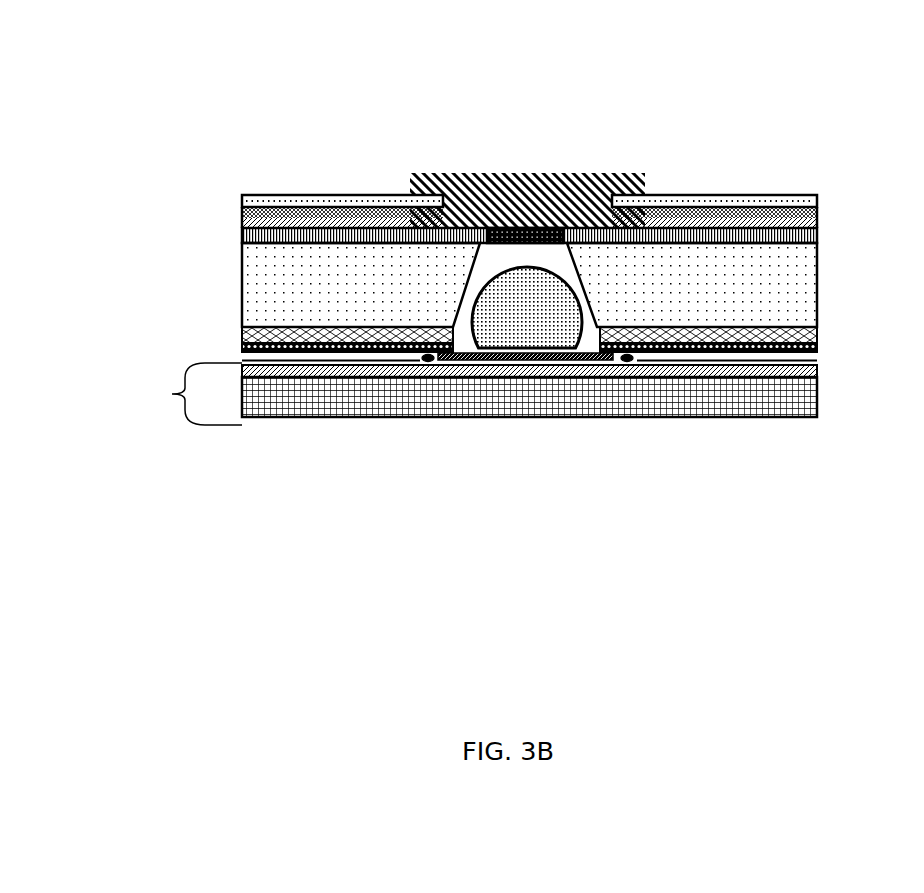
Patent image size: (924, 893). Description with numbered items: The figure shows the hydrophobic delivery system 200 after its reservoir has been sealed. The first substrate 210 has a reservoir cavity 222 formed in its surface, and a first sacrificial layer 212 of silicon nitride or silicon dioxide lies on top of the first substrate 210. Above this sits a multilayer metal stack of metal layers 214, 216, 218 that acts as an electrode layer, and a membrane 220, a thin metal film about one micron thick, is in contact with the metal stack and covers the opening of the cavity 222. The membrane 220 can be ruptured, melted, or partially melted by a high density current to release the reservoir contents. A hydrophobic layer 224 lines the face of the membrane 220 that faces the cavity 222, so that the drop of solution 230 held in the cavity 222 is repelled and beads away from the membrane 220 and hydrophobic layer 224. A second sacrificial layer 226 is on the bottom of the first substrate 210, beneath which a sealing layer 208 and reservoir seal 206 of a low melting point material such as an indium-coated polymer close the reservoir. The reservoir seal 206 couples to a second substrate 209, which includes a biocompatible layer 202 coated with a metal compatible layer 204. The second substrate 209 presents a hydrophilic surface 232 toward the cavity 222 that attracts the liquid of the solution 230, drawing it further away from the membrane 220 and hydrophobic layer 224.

The hydrophobic delivery system 200 is at (296, 62).
The biocompatible layer 202 is at (817, 397).
The metal compatible layer 204 is at (817, 362).
The reservoir seal 206 is at (424, 361).
The sealing layer 208 is at (242, 345).
The second substrate 209 is at (172, 394).
The first substrate 210 is at (242, 288).
The first sacrificial layer 212 is at (242, 233).
The metal layer 214 is at (817, 218).
The metal layer 216 is at (242, 212).
The metal layer 218 is at (335, 194).
The membrane 220 is at (427, 175).
The reservoir cavity 222 is at (461, 334).
The hydrophobic layer 224 is at (515, 228).
The second sacrificial layer 226 is at (817, 333).
The solution 230 is at (523, 350).
The hydrophilic surface 232 is at (560, 358).